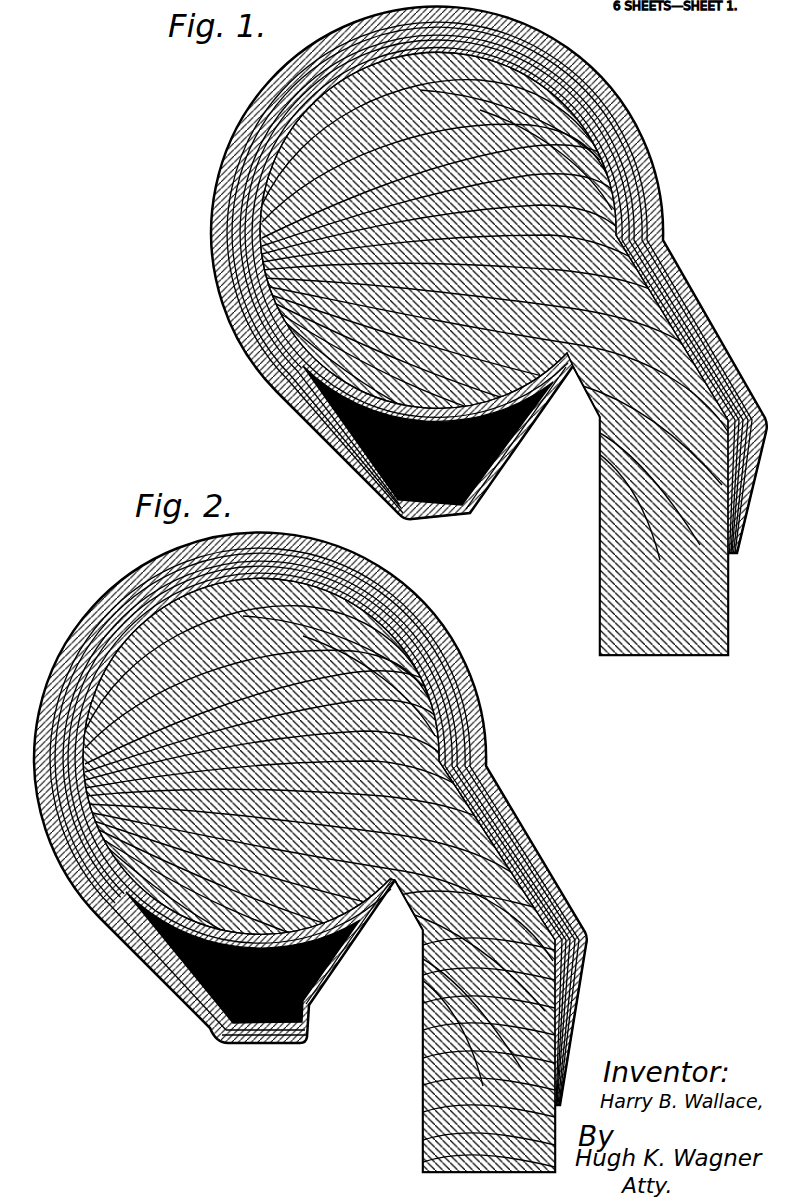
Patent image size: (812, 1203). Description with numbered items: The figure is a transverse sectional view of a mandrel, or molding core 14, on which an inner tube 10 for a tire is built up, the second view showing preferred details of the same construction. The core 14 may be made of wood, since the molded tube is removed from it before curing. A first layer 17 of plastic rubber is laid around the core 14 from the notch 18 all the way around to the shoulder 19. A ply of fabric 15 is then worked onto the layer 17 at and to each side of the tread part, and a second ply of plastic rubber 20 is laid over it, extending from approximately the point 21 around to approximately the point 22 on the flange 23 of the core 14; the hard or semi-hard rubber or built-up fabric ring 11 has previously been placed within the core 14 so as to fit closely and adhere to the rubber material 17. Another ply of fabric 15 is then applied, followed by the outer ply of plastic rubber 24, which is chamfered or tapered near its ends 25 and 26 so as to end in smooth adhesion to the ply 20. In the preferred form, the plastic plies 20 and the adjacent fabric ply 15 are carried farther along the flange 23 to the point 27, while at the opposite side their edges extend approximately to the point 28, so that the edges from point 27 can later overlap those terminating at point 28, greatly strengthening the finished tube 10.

In FIG. 1, the inner tube 10 is at (590, 76).
In FIG. 2, the inner tube 10 is at (457, 655).
In FIG. 1, the bead or ring 11 is at (493, 470).
In FIG. 2, the bead or ring 11 is at (330, 974).
In FIG. 1, the molding core or mandrel 14 is at (546, 44).
In FIG. 2, the molding core or mandrel 14 is at (433, 625).
In FIG. 1, the fabric strip 15 is at (603, 126).
In FIG. 2, the fabric strip 15 is at (82, 681).
In FIG. 1, the layer of plastic rubber 17 is at (590, 151).
In FIG. 2, the layer of plastic rubber 17 is at (477, 751).
In FIG. 1, the notch 18 is at (571, 372).
In FIG. 2, the notch 18 is at (395, 886).
In FIG. 1, the shoulder 19 is at (700, 369).
In FIG. 2, the shoulder 19 is at (537, 867).
In FIG. 1, the second ply of plastic rubber 20 is at (622, 173).
In FIG. 2, the second ply of plastic rubber 20 is at (107, 622).
In FIG. 1, the point 21 is at (437, 515).
In FIG. 1, the point 22 is at (734, 558).
In FIG. 1, the flange 23 is at (623, 601).
In FIG. 1, the outer ply of plastic rubber 24 is at (652, 200).
In FIG. 2, the outer ply of plastic rubber 24 is at (522, 814).
In FIG. 1, the end of outer ply 25 is at (363, 482).
In FIG. 1, the end of outer ply 26 is at (740, 528).
In FIG. 2, the point 27 is at (556, 1107).
In FIG. 2, the point 28 is at (318, 998).